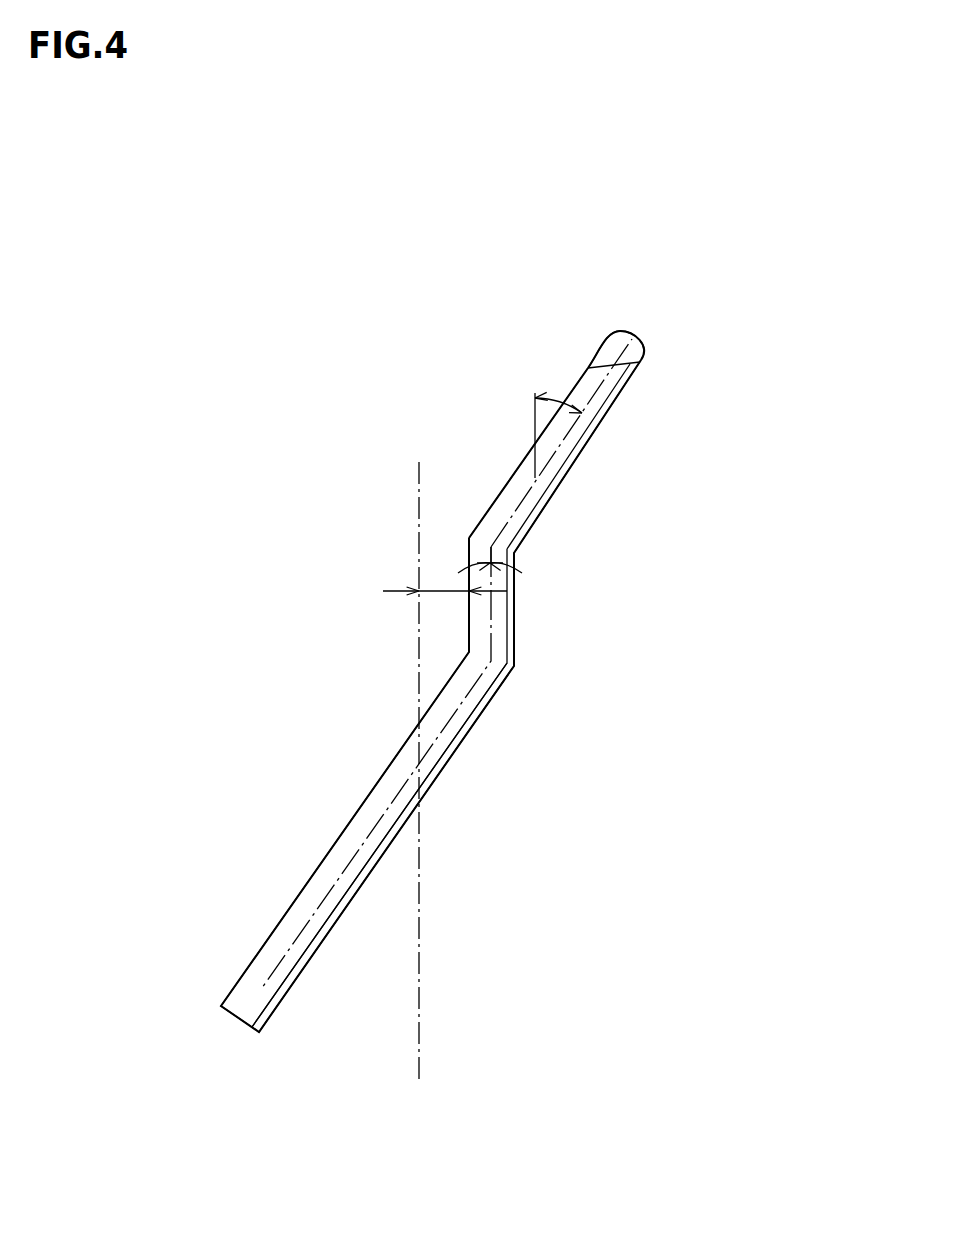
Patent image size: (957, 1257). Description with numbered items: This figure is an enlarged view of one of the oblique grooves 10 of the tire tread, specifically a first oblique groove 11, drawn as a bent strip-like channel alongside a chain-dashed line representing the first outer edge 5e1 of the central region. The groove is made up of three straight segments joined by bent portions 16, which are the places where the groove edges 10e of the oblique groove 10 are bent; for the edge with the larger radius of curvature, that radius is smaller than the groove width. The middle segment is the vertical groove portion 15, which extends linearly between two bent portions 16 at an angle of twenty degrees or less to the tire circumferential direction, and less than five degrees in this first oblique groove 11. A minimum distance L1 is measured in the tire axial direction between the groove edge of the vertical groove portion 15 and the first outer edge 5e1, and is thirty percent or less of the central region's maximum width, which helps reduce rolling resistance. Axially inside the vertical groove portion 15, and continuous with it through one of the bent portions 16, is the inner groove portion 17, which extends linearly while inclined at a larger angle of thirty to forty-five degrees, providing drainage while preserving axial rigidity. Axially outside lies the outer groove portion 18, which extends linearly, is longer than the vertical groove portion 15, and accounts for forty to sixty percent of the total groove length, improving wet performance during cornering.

The oblique groove 10 is at (382, 735).
The first oblique groove 11 is at (303, 837).
The vertical groove portion 15 is at (498, 632).
The bent portion 16 is at (490, 524).
The inner groove portion 17 is at (590, 418).
The groove edge 10e is at (603, 375).
The outer groove portion 18 is at (350, 874).
The first outer edge 5e1 is at (417, 756).
The minimum distance L1 is at (445, 592).